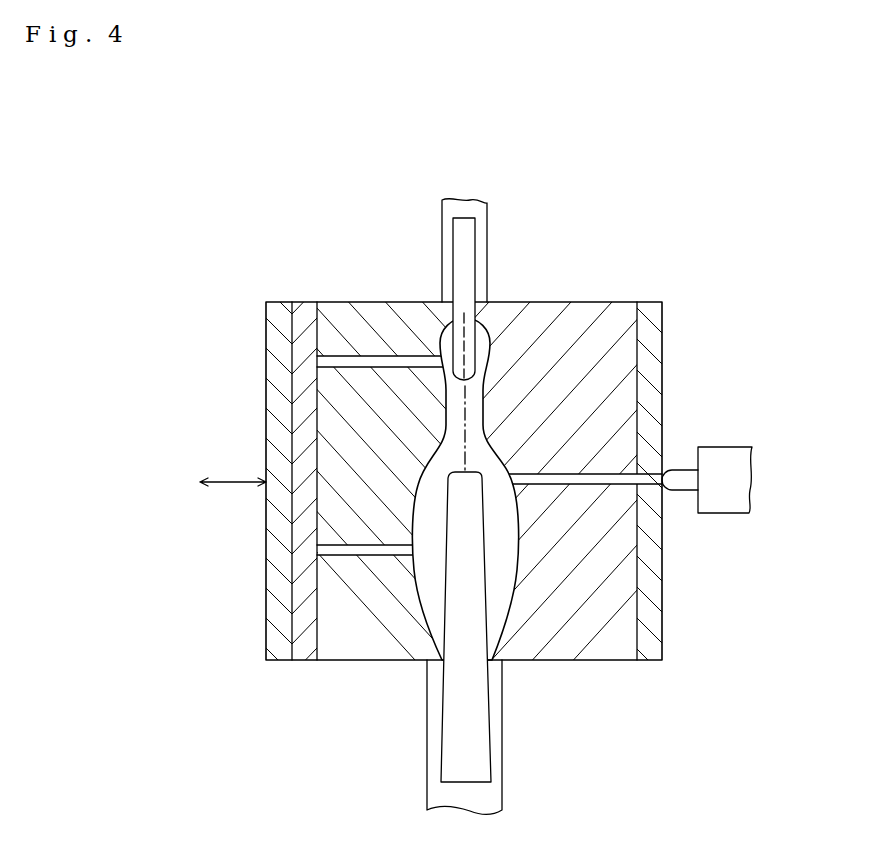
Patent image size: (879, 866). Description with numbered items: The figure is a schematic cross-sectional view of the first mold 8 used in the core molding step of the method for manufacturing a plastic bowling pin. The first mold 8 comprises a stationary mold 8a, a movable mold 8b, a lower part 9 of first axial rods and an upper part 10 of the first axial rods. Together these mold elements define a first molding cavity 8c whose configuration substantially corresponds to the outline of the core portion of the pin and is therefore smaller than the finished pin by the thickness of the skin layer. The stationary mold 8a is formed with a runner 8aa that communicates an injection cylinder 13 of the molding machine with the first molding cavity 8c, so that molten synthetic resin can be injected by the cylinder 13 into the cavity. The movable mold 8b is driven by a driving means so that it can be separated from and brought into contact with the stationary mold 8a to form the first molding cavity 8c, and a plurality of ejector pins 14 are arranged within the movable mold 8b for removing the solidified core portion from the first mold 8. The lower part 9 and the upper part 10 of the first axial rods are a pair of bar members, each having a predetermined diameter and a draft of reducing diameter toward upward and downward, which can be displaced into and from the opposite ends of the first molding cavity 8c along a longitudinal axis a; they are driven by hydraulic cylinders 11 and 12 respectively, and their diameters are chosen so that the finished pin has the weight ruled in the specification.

The first mold 8 is at (672, 627).
The stationary mold 8a is at (630, 578).
The runner 8aa is at (590, 482).
The movable mold 8b is at (325, 600).
The first molding cavity 8c is at (498, 586).
The lower part of first axial rods 9 is at (483, 753).
The upper part of first axial rods 10 is at (470, 266).
The hydraulic cylinder 11 is at (503, 798).
The hydraulic cylinder 12 is at (488, 226).
The injection cylinder 13 is at (733, 513).
The ejector pins 14 is at (335, 378).
The longitudinal axis a is at (462, 339).